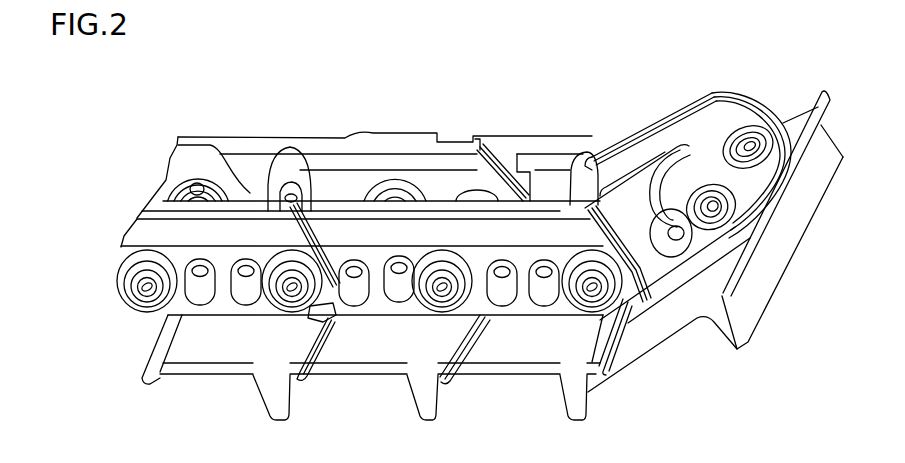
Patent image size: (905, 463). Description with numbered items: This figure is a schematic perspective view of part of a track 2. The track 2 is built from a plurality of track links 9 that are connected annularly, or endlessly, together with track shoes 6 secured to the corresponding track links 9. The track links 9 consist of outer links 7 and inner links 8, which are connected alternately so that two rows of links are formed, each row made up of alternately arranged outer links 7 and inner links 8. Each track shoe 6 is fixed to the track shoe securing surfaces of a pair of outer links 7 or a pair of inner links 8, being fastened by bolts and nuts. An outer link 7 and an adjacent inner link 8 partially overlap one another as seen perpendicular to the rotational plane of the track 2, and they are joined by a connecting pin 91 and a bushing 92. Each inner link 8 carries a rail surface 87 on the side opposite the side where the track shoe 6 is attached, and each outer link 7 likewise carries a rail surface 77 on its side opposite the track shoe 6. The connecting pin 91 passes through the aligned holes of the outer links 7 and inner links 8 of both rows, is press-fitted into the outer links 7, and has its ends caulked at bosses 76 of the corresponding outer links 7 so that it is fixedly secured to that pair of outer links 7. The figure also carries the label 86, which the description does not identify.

The track 2 is at (290, 95).
The track shoe 6 is at (226, 350).
The outer link 7 is at (593, 137).
The inner link 8 is at (453, 160).
The track link 9 is at (589, 89).
The boss 76 is at (128, 268).
The rail surface 77 is at (247, 145).
The guide strip 86 is at (773, 213).
The rail surface 87 is at (358, 205).
The connecting pin 91 is at (150, 303).
The bushing 92 is at (750, 235).